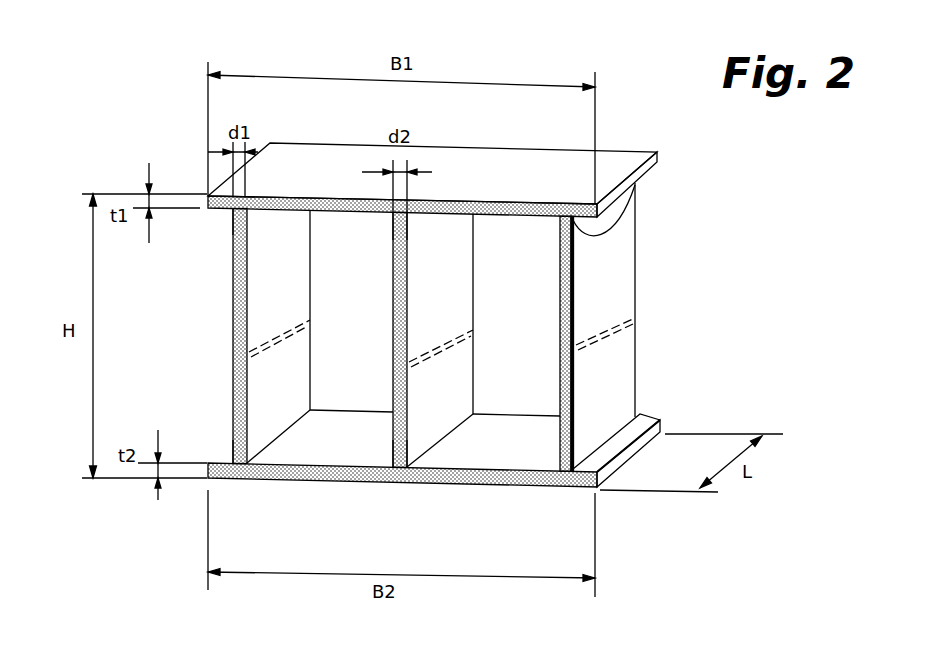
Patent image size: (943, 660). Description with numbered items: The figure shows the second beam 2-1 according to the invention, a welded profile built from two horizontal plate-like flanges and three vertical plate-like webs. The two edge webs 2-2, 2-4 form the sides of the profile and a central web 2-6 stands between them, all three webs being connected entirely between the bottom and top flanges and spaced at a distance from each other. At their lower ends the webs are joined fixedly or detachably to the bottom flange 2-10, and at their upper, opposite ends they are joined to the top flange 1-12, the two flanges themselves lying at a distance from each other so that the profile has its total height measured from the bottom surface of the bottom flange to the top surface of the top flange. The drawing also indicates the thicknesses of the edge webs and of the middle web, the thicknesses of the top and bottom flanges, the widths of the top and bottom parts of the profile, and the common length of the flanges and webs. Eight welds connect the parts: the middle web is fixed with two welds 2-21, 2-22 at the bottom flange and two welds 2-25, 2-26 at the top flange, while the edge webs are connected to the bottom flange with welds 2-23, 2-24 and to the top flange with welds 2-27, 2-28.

The profile element 2-1 is at (148, 110).
The top flange 1-12 is at (614, 176).
The edge web 2-2 is at (233, 343).
The edge web 2-4 is at (622, 285).
The central web 2-6 is at (462, 285).
The bottom plate 2-10 is at (521, 486).
The weld 2-21 is at (428, 485).
The weld 2-22 is at (393, 466).
The weld 2-23 is at (622, 415).
The weld 2-24 is at (233, 462).
The weld 2-25 is at (407, 218).
The weld 2-26 is at (393, 215).
The weld 2-27 is at (630, 222).
The weld 2-28 is at (232, 211).